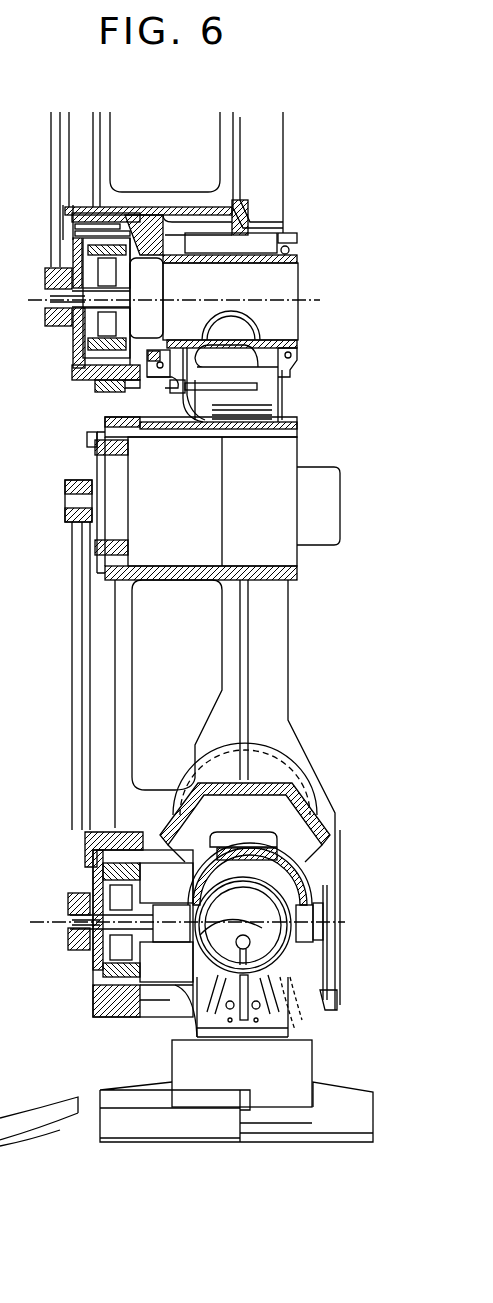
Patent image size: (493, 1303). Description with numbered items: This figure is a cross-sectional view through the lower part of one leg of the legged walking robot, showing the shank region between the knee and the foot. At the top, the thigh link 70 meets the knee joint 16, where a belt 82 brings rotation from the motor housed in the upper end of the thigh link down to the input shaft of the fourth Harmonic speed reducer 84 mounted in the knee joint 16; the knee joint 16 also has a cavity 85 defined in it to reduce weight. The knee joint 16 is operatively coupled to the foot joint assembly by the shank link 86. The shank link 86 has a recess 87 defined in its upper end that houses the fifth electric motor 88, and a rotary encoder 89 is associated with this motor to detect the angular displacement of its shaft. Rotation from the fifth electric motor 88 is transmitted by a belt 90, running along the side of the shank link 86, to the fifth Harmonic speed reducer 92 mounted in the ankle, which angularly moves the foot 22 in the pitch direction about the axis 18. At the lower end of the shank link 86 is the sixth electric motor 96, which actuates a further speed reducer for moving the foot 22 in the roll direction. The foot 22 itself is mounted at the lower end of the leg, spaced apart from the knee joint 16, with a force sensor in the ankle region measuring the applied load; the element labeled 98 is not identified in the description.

The knee joint 16 is at (272, 302).
The ankle pitch joint 18 is at (50, 922).
The foot 22 is at (337, 1100).
The thigh link 70 is at (228, 158).
The belt 82 is at (52, 141).
The fourth Harmonic speed reducer 84 is at (75, 346).
The cavity 85 is at (262, 288).
The shank link 86 is at (275, 663).
The recess 87 is at (296, 436).
The fifth electric motor 88 is at (275, 466).
The rotary encoder 89 is at (318, 486).
The belt 90 is at (72, 626).
The fifth Harmonic speed reducer 92 is at (86, 966).
The sixth electric motor 96 is at (260, 898).
The mounting block 98 is at (288, 1062).